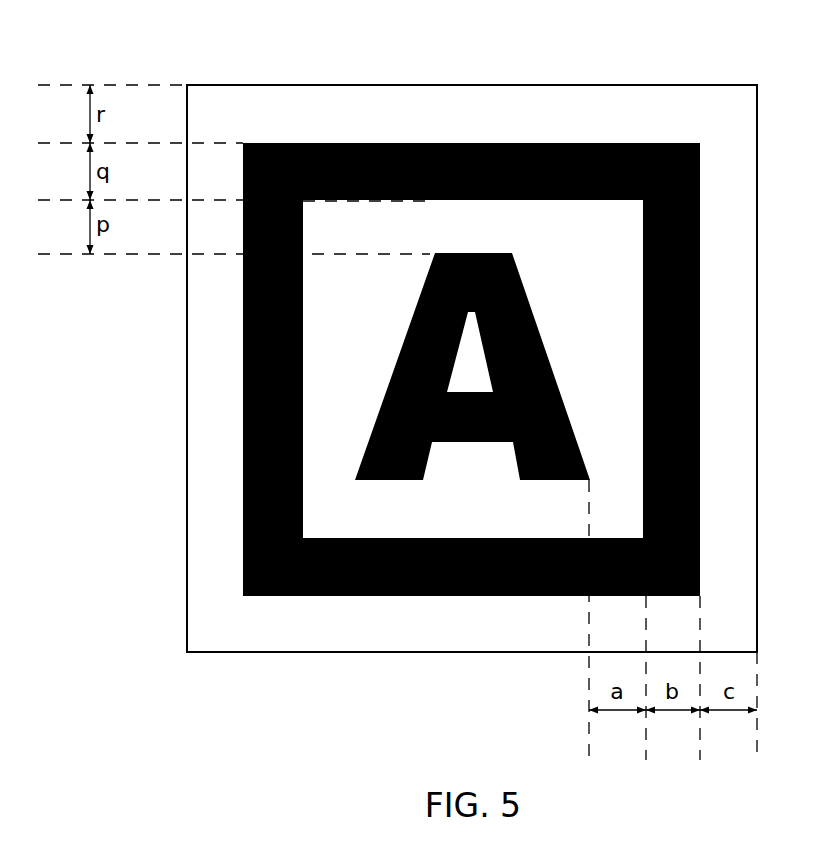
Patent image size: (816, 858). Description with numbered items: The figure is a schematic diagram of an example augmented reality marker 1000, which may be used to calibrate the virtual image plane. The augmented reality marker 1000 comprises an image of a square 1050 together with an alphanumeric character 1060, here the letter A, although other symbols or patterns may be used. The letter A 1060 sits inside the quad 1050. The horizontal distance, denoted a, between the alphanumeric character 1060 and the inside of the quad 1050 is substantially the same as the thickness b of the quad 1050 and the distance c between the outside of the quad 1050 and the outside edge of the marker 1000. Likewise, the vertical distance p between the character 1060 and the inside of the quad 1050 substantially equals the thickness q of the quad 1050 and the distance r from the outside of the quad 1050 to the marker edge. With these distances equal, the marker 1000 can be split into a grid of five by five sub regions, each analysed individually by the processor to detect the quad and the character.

The augmented reality marker 1000 is at (734, 62).
The square 1050 is at (462, 143).
The alphanumeric character 1060 is at (530, 308).